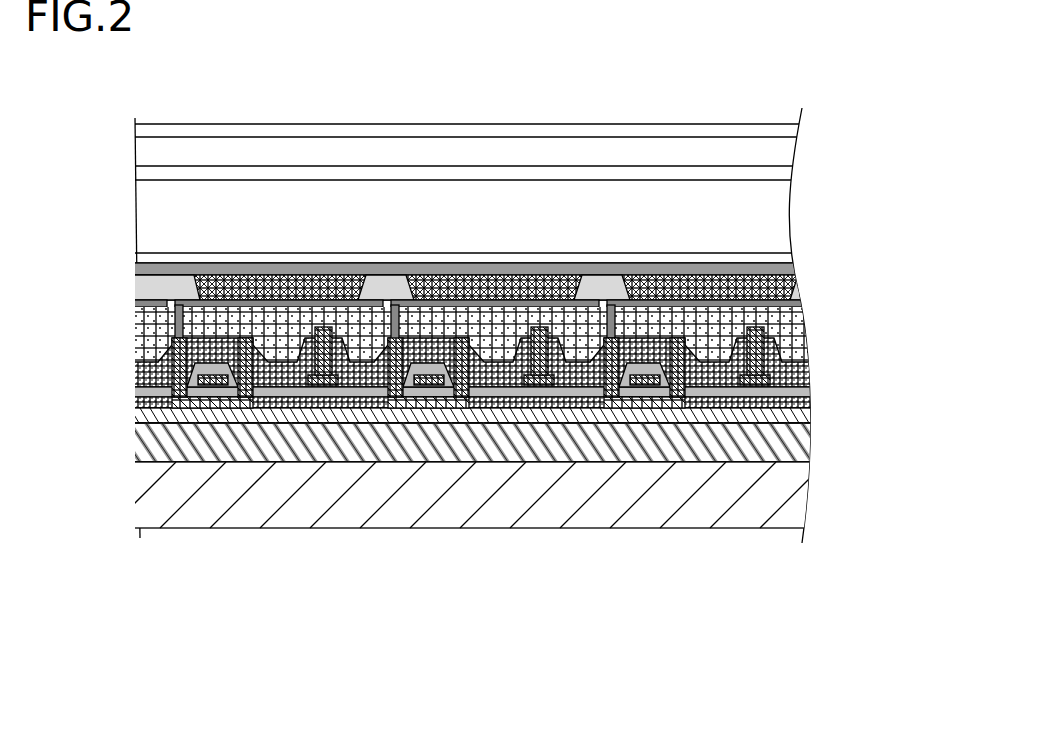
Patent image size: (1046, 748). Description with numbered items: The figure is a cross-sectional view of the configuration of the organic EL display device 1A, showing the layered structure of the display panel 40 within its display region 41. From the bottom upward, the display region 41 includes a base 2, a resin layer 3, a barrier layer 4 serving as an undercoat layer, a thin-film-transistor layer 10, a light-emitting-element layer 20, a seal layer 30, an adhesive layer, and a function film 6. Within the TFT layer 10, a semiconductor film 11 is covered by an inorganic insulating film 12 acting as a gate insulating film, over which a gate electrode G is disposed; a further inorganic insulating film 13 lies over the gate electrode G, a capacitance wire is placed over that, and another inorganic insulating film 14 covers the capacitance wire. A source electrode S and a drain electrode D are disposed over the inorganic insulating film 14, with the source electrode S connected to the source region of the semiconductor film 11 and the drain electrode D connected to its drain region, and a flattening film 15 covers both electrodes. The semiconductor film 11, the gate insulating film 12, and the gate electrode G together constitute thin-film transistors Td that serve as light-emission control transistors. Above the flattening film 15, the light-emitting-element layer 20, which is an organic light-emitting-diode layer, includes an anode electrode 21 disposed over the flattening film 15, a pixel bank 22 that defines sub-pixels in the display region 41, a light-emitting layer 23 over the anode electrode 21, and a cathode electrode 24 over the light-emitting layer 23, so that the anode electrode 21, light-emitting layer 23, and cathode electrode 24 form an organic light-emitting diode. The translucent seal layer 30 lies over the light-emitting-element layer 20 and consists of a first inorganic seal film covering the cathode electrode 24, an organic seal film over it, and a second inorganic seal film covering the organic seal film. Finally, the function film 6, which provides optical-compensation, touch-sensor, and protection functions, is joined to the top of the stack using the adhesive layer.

The organic EL display device 1A is at (478, 72).
The display panel 40 is at (737, 109).
The display region 41 is at (820, 650).
The base 2 is at (493, 495).
The resin layer 3 is at (471, 442).
The barrier layer 4 is at (475, 415).
The thin-film-transistor (TFT) layer 10 is at (475, 356).
The inorganic insulating film 12 is at (475, 402).
The inorganic insulating film 13 is at (475, 392).
The inorganic insulating film 14 is at (472, 362).
The flattening film 15 is at (475, 346).
The semiconductor film 11 is at (456, 380).
The gate electrode G is at (435, 388).
The drain electrode D is at (411, 394).
The source electrode S is at (474, 343).
The thin-film transistor Td is at (450, 488).
The light-emitting-element layer 20 is at (488, 285).
The anode electrode 21 is at (476, 303).
The pixel bank 22 is at (391, 297).
The light-emitting layer 23 is at (488, 287).
The cathode electrode 24 is at (475, 269).
The seal layer 30 is at (472, 221).
The function film 6 is at (472, 130).